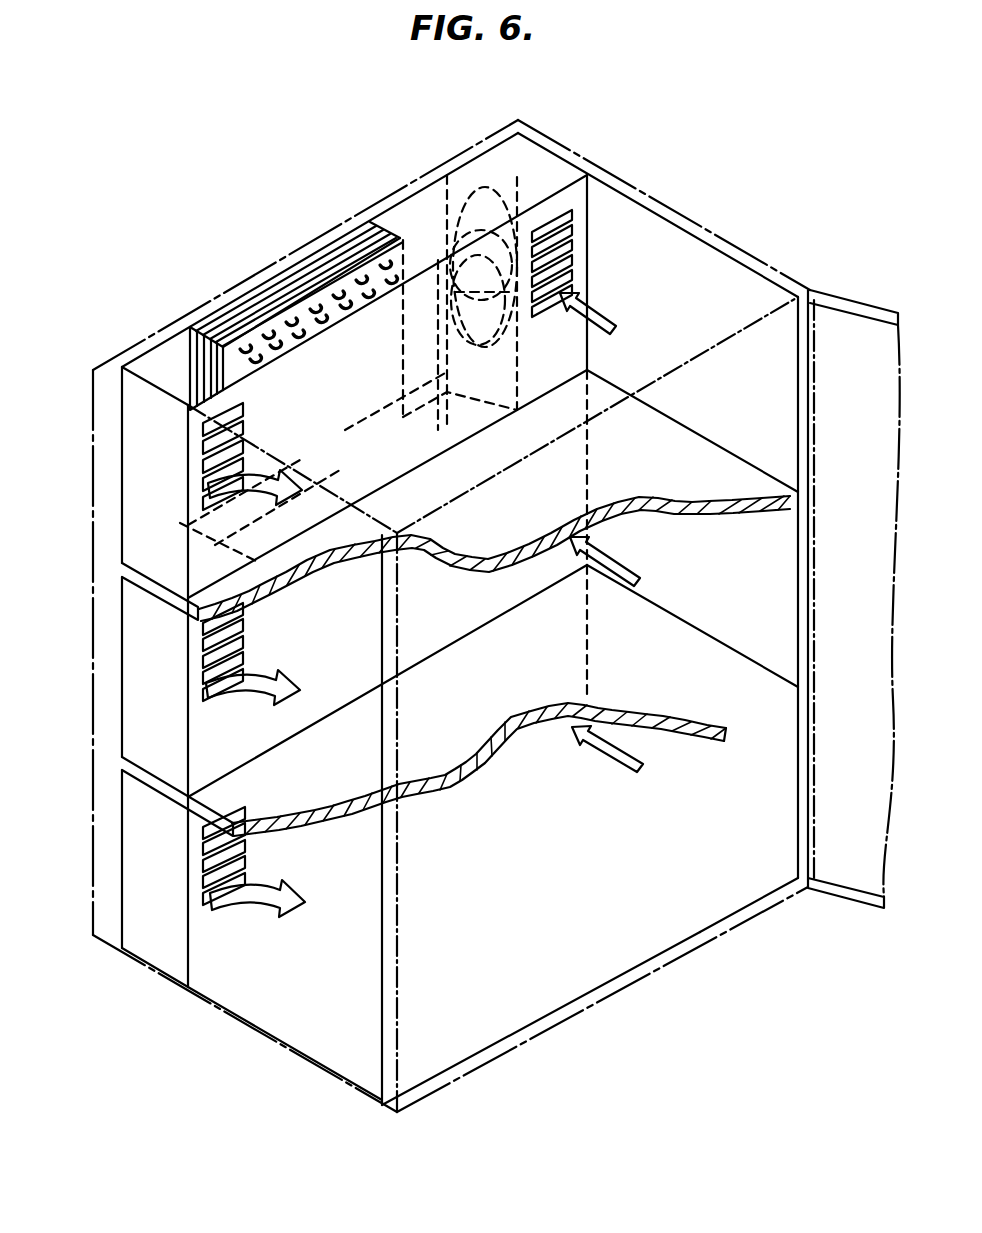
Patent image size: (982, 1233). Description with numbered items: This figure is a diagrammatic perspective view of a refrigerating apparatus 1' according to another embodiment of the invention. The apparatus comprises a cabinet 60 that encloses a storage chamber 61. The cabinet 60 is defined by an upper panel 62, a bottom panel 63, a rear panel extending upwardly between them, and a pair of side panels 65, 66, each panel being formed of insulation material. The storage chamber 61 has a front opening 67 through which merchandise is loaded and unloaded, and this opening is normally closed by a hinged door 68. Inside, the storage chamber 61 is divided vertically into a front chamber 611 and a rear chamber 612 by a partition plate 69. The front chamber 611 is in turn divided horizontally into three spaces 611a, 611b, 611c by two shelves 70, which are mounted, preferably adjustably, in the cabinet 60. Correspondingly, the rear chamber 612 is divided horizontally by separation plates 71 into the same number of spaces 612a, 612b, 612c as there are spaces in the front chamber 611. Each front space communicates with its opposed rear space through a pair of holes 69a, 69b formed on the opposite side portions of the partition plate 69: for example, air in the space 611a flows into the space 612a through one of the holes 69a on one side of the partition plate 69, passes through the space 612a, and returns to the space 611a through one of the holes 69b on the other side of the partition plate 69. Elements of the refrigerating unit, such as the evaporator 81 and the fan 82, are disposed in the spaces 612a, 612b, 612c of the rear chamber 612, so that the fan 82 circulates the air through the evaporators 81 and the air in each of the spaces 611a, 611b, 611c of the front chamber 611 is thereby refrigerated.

The cabinet 60 is at (747, 250).
The refrigerating apparatus 1' is at (664, 205).
The storage chamber 61 is at (590, 704).
The front chamber 611 is at (387, 583).
The space 611a is at (692, 431).
The space 611b is at (692, 626).
The space 611c is at (738, 782).
The rear chamber 612 is at (259, 677).
The space 612a is at (403, 203).
The space 612b is at (127, 742).
The space 612c is at (152, 937).
The upper panel 62 is at (607, 210).
The bottom panel 63 is at (572, 1012).
The side panel 65 is at (783, 267).
The side panel 66 is at (313, 1052).
The front opening 67 is at (770, 850).
The hinged door 68 is at (868, 305).
The partition plate 69 is at (317, 897).
The hole 69a is at (573, 268).
The hole 69b is at (217, 492).
The shelf 70 is at (200, 609).
The separation plate 71 is at (142, 566).
The evaporator 81 is at (300, 290).
The fan 82 is at (485, 203).